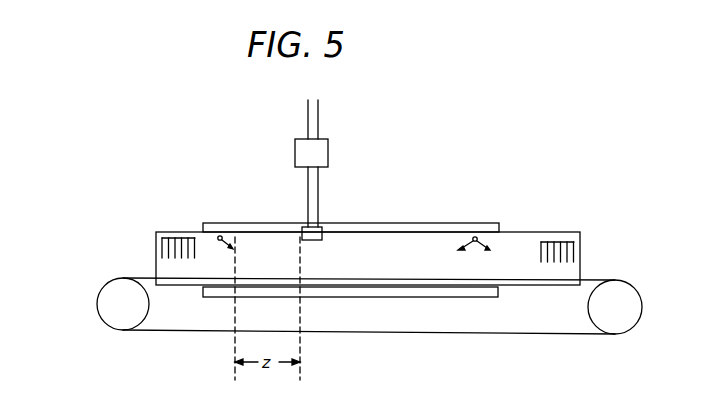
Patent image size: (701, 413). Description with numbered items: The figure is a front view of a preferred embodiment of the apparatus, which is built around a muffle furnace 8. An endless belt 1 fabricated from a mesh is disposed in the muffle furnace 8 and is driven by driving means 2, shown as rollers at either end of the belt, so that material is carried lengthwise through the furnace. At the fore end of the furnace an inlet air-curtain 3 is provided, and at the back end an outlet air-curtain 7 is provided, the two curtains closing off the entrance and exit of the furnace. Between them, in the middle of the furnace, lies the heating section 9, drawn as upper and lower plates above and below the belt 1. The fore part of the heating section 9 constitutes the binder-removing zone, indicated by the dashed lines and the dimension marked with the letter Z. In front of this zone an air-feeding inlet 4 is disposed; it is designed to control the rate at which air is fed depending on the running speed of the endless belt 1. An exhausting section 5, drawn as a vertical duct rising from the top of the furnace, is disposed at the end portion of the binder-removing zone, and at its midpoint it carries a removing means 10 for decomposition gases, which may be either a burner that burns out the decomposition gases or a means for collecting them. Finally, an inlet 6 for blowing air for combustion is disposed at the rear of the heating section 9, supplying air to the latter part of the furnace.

The endless belt 1 is at (139, 277).
The driving means 2 is at (113, 310).
The inlet air-curtain 3 is at (178, 237).
The air-feeding inlet 4 is at (220, 235).
The exhausting section 5 is at (318, 190).
The inlet for blowing air for combustion 6 is at (475, 236).
The outlet air-curtain 7 is at (574, 245).
The muffle furnace 8 is at (530, 234).
The heating section 9 is at (410, 227).
The removing means 10 is at (324, 148).